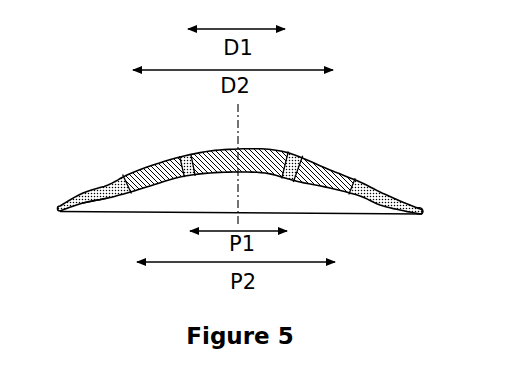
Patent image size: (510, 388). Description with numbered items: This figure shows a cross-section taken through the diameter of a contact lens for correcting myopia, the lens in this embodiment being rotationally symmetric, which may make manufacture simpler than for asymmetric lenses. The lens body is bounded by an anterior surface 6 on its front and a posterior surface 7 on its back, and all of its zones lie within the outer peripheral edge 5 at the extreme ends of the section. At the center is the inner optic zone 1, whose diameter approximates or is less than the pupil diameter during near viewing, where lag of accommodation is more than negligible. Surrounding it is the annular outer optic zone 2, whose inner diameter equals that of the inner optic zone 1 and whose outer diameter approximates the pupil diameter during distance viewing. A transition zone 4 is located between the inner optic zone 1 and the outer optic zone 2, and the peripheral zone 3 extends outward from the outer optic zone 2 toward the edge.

The inner optic zone 1 is at (240, 162).
The outer optic zone 2 is at (333, 176).
The peripheral zone 3 is at (378, 193).
The transition zone 4 is at (282, 152).
The outer peripheral edge 5 is at (424, 212).
The anterior surface 6 is at (108, 184).
The posterior surface 7 is at (105, 205).